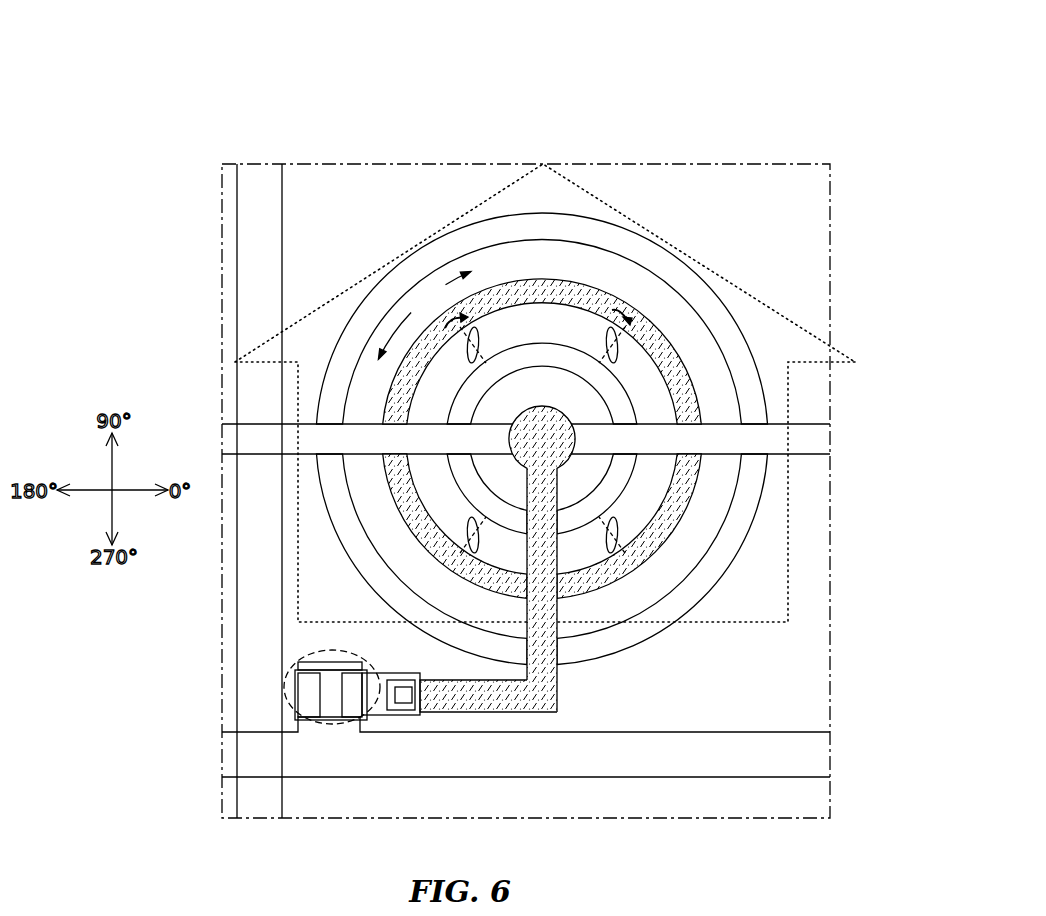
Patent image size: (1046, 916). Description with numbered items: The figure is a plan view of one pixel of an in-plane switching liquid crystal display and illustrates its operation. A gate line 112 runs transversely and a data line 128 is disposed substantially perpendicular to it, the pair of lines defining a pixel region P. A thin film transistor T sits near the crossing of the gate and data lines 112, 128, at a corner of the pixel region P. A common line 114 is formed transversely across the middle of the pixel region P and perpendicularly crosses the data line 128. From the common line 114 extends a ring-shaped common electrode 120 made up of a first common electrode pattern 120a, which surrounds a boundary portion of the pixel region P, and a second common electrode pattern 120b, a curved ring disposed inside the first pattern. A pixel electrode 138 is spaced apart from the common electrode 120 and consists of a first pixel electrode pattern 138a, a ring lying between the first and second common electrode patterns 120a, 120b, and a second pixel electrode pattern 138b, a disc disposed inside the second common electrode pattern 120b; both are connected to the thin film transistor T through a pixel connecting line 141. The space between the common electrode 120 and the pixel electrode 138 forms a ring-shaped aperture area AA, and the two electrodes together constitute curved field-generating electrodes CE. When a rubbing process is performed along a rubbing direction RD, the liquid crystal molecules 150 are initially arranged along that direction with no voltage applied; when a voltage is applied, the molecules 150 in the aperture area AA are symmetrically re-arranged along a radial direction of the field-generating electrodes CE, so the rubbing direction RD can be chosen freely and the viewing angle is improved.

The gate line 112 is at (830, 732).
The common line 114 is at (830, 424).
The common electrode 120 is at (542, 362).
The first common electrode pattern 120a is at (543, 227).
The second common electrode pattern 120b is at (555, 362).
The data line 128 is at (237, 820).
The pixel electrode 138 is at (603, 383).
The first pixel electrode pattern 138a is at (548, 415).
The second pixel electrode pattern 138b is at (636, 321).
The pixel connecting line 141 is at (557, 697).
The liquid crystal molecules 150 is at (486, 350).
The pixel region P is at (303, 267).
The thin film transistor T is at (330, 724).
The rubbing direction RD is at (722, 623).
The field-generating electrodes CE is at (570, 356).
The aperture area AA is at (424, 316).